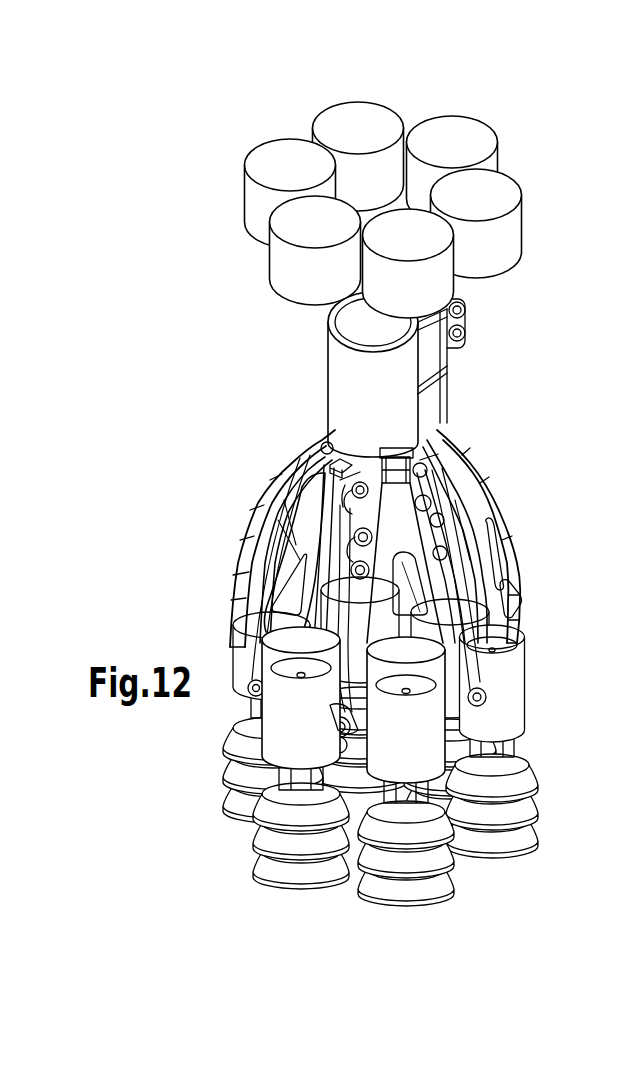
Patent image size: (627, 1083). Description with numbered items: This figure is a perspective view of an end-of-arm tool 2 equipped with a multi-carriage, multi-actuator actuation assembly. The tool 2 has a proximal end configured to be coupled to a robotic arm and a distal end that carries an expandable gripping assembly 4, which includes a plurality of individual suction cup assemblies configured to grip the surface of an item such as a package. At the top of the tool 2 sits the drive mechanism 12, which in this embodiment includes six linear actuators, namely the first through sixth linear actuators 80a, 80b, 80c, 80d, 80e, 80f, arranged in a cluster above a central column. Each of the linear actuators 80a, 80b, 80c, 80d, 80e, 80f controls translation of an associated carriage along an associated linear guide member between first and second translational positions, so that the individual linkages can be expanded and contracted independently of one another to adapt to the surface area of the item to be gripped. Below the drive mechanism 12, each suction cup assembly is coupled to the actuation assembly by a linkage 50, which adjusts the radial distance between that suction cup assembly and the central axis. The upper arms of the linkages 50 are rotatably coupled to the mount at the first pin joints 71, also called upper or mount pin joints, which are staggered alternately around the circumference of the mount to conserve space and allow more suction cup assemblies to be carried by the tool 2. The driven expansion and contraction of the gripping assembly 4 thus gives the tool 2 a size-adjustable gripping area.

The end-of-arm tool 2 is at (390, 649).
The expandable gripping assembly 4 is at (527, 527).
The drive mechanism 12 is at (388, 169).
The linkage 50 is at (256, 467).
The first pin joints 71 is at (425, 473).
The first linear actuator 80a is at (363, 125).
The second linear actuator 80b is at (462, 140).
The third linear actuator 80c is at (498, 193).
The fourth linear actuator 80d is at (422, 240).
The fifth linear actuator 80e is at (300, 217).
The sixth linear actuator 80f is at (276, 153).